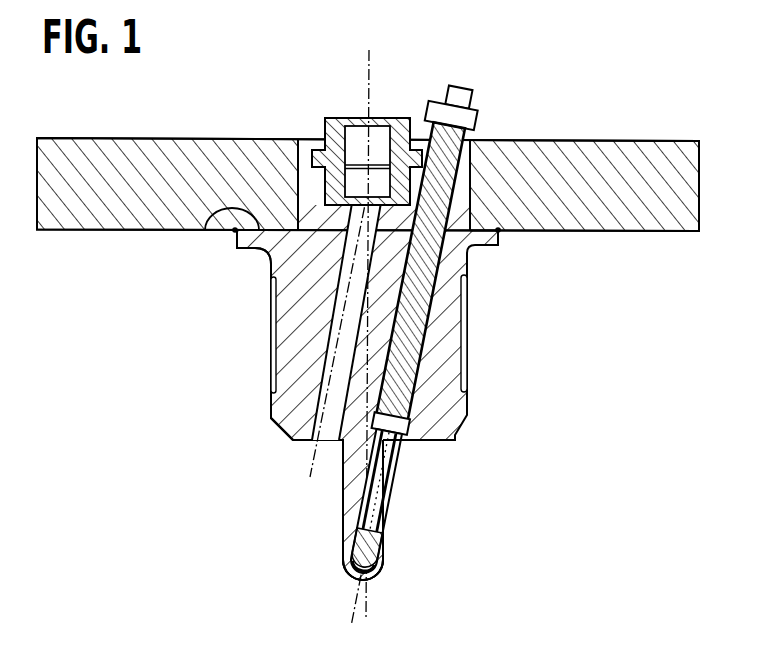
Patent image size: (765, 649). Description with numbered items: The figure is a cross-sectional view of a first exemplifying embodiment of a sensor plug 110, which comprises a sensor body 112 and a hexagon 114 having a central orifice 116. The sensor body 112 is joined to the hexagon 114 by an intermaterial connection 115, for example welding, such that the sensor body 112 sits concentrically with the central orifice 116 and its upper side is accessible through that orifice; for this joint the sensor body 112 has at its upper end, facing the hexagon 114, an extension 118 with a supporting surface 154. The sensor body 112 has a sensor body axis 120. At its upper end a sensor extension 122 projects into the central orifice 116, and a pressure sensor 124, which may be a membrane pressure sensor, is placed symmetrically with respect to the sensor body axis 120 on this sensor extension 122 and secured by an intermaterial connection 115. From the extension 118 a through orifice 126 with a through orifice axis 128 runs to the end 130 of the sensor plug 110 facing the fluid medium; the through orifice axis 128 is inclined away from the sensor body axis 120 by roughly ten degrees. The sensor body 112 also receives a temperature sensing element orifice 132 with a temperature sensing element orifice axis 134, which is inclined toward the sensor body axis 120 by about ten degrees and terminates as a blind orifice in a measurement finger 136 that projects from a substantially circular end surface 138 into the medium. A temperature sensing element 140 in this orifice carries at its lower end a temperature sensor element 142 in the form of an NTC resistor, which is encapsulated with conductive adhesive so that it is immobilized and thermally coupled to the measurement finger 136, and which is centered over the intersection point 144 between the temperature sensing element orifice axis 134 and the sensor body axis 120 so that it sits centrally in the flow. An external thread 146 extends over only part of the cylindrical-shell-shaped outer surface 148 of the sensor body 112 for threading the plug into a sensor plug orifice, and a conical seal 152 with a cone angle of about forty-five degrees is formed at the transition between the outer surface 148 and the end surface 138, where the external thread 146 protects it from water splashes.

The sensor plug 110 is at (603, 112).
The sensor body 112 is at (433, 418).
The hexagon 114 is at (662, 213).
The intermaterial connection 115 is at (235, 232).
The central orifice 116 is at (307, 158).
The extension 118 is at (470, 245).
The sensor body axis 120 is at (370, 86).
The sensor extension 122 is at (298, 140).
The pressure sensor 124 is at (343, 118).
The through orifice 126 is at (337, 312).
The through orifice axis 128 is at (333, 347).
The end 130 is at (318, 503).
The temperature sensing element orifice 132 is at (432, 340).
The temperature sensing element orifice axis 134 is at (420, 362).
The measurement finger 136 is at (382, 547).
The end surface 138 is at (415, 440).
The temperature sensing element 140 is at (433, 415).
The temperature sensor element 142 is at (380, 568).
The intersection point 144 is at (357, 553).
The external thread 146 is at (268, 382).
The cylindrical-shell-shaped outer surface 148 is at (145, 340).
The conical seal 152 is at (285, 436).
The supporting surface 154 is at (235, 229).